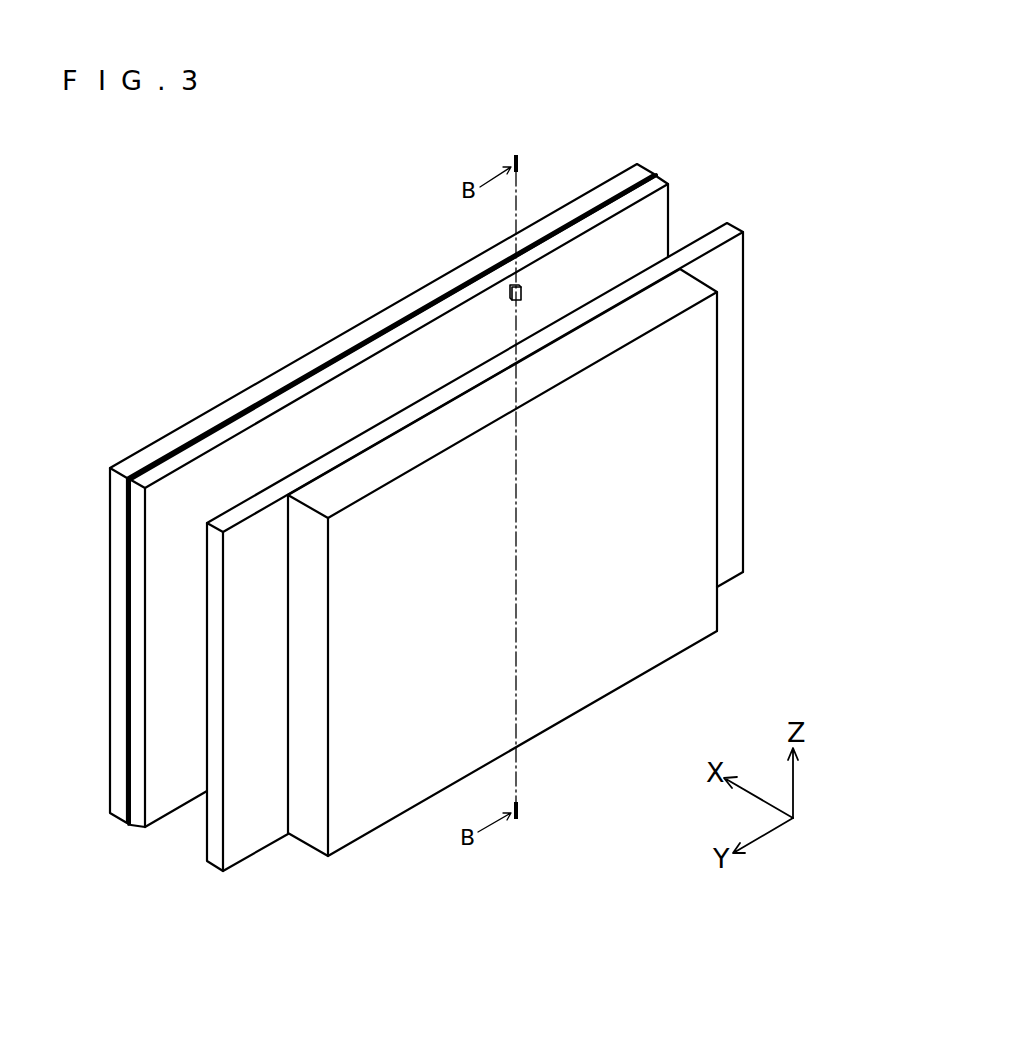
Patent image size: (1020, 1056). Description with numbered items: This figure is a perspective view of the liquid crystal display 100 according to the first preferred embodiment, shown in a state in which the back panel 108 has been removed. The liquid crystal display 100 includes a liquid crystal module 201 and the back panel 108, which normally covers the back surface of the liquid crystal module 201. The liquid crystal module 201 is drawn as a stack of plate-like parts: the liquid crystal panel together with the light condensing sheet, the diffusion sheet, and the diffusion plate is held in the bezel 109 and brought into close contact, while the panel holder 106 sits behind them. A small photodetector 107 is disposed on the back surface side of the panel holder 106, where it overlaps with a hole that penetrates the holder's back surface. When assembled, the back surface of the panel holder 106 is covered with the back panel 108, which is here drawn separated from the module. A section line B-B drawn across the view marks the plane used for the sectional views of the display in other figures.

The liquid crystal display 100 is at (152, 171).
The panel holder 106 is at (138, 545).
The photodetector 107 is at (522, 284).
The back panel 108 is at (707, 440).
The bezel 109 is at (183, 435).
The liquid crystal module 201 is at (132, 835).